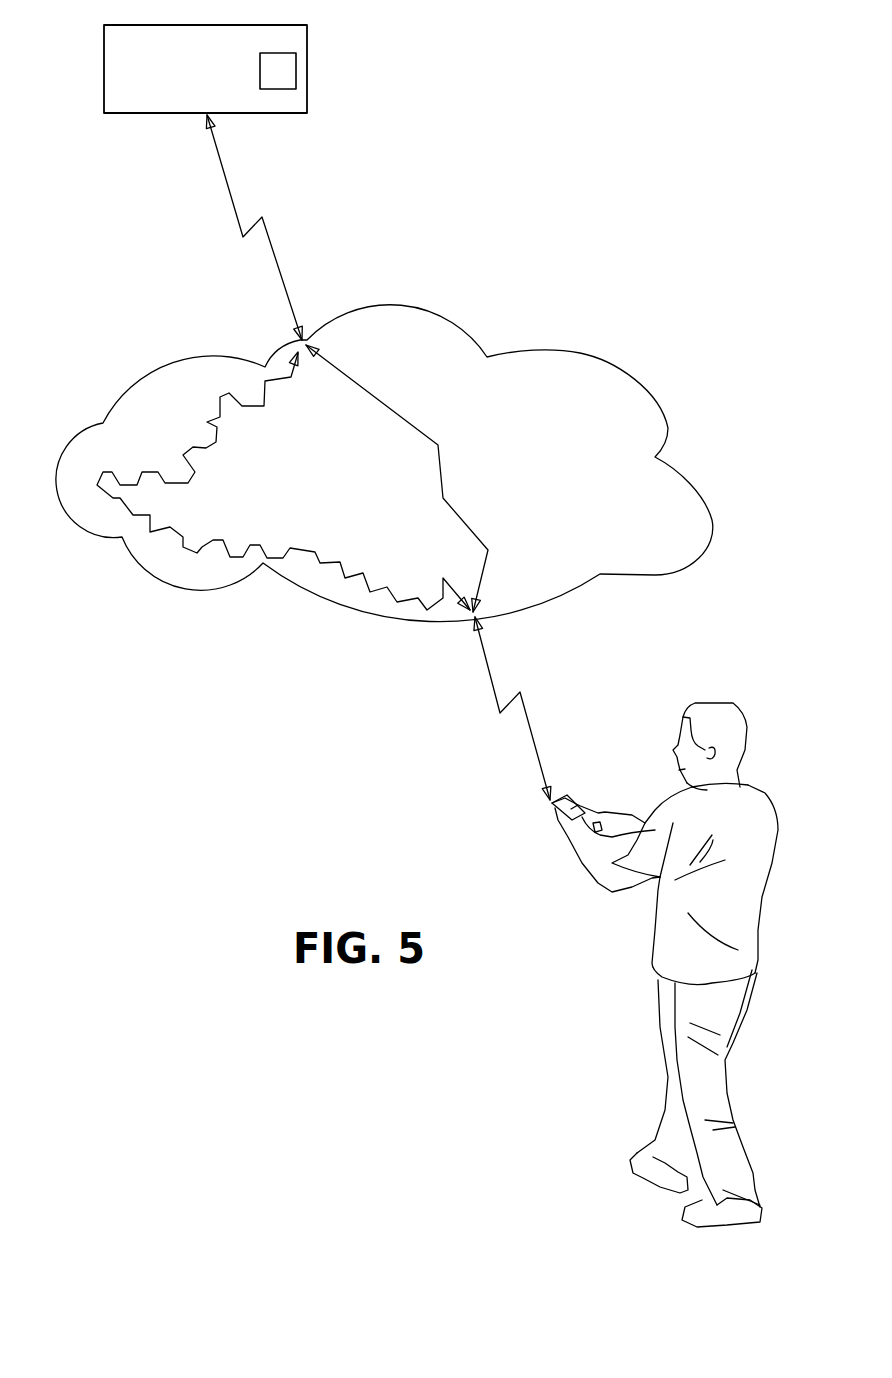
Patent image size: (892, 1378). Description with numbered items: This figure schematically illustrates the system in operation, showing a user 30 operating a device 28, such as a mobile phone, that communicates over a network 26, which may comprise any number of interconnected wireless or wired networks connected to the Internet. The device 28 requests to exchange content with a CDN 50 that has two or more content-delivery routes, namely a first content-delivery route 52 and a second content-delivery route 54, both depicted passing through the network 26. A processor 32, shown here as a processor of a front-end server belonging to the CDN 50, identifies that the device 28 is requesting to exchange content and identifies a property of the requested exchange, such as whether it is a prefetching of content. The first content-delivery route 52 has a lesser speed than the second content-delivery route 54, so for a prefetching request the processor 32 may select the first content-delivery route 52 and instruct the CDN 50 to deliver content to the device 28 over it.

The CDN 50 is at (104, 75).
The processor 32 is at (296, 68).
The network 26 is at (163, 587).
The first content-delivery route 52 is at (193, 447).
The second content-delivery route 54 is at (423, 423).
The device 28 is at (568, 800).
The user 30 is at (763, 812).